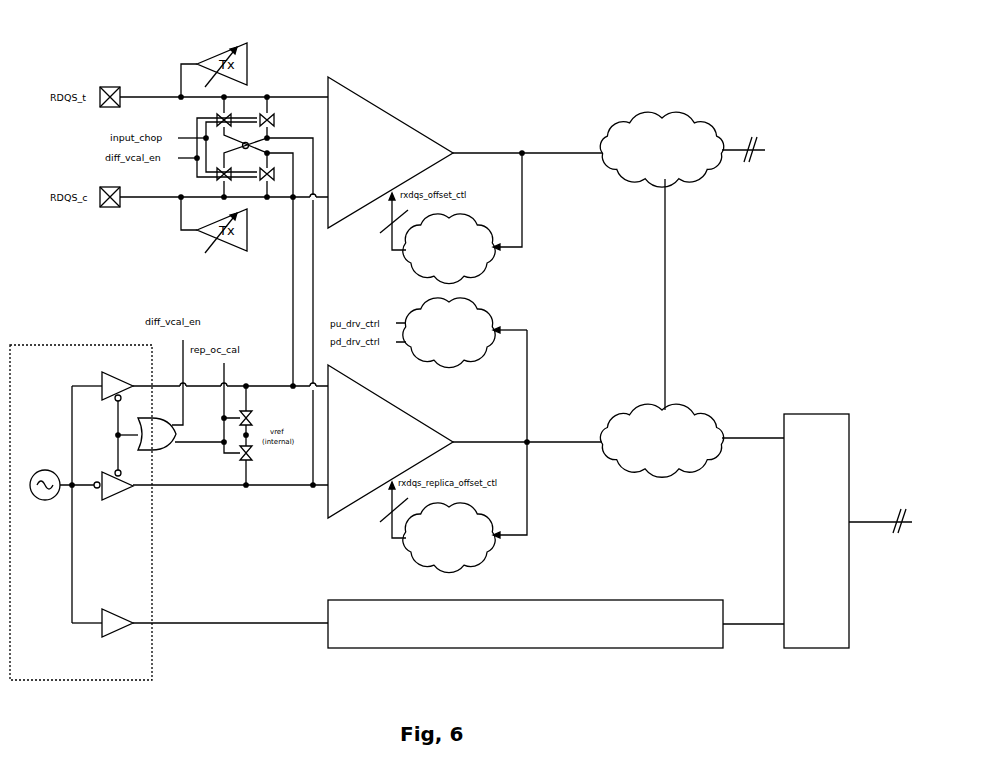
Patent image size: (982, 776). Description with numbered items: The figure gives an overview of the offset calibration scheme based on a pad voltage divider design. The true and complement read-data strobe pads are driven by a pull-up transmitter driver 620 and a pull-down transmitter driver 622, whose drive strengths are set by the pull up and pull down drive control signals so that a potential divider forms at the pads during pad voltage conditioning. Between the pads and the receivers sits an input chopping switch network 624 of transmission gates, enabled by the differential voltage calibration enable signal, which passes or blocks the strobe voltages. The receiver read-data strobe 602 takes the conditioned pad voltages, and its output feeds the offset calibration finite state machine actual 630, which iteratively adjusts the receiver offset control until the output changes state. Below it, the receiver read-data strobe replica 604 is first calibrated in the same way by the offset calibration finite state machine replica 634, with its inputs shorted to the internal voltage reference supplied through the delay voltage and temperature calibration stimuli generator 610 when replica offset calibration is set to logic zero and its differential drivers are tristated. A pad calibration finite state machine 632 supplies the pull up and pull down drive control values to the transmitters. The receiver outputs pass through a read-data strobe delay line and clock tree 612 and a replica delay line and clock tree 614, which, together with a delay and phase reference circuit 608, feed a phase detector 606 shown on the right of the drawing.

The RxDQS receiver 602 is at (400, 95).
The RxDQS replica receiver 604 is at (400, 385).
The phase detector 606 is at (849, 430).
The delay/phase reference circuit 608 is at (700, 648).
The delay VT cal stimuli generator 610 is at (20, 350).
The RDQS delay line and clock tree 612 is at (700, 175).
The replica delay line and clock tree 614 is at (700, 465).
The pull-up Tx driver 620 is at (250, 50).
The pull-down Tx driver 622 is at (250, 245).
The input chopper switch network 624 is at (275, 112).
The OC CAL FSM (ACT) 630 is at (470, 272).
The VPAD CAL FSM 632 is at (470, 356).
The OC CAL FSM (REP) 634 is at (470, 561).